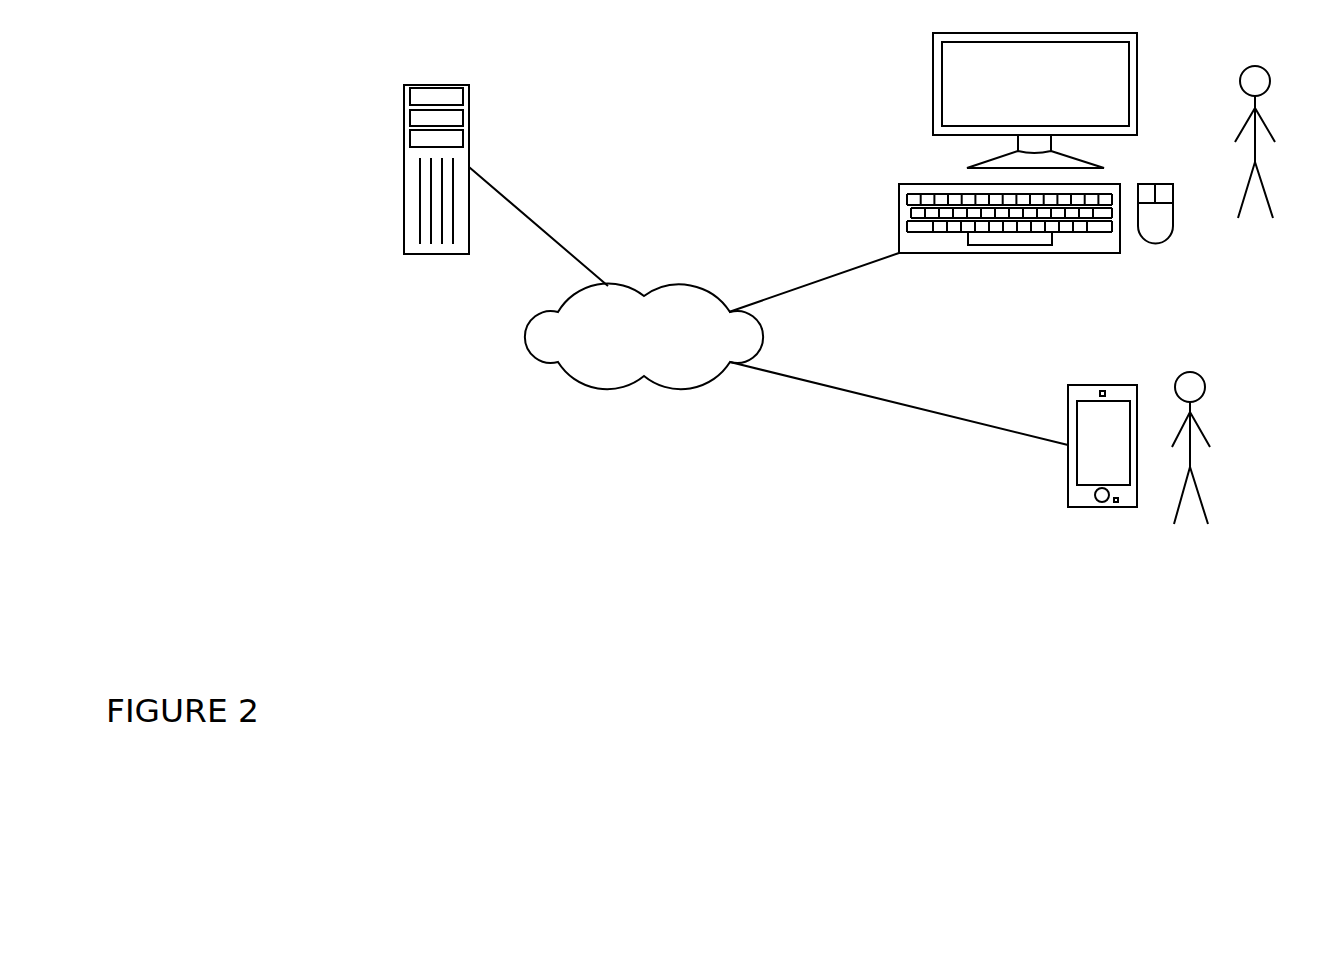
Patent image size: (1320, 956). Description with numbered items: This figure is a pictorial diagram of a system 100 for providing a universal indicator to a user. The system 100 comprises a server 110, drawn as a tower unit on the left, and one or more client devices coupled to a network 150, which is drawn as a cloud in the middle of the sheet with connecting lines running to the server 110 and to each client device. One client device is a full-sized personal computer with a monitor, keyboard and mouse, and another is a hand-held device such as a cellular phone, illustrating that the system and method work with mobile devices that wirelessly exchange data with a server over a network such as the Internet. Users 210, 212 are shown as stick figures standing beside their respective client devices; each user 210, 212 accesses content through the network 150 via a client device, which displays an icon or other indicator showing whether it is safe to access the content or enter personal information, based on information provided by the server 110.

The system 100 is at (202, 671).
The server 110 is at (404, 164).
The network 150 is at (558, 307).
The user 210 is at (1254, 155).
The user 212 is at (1192, 450).